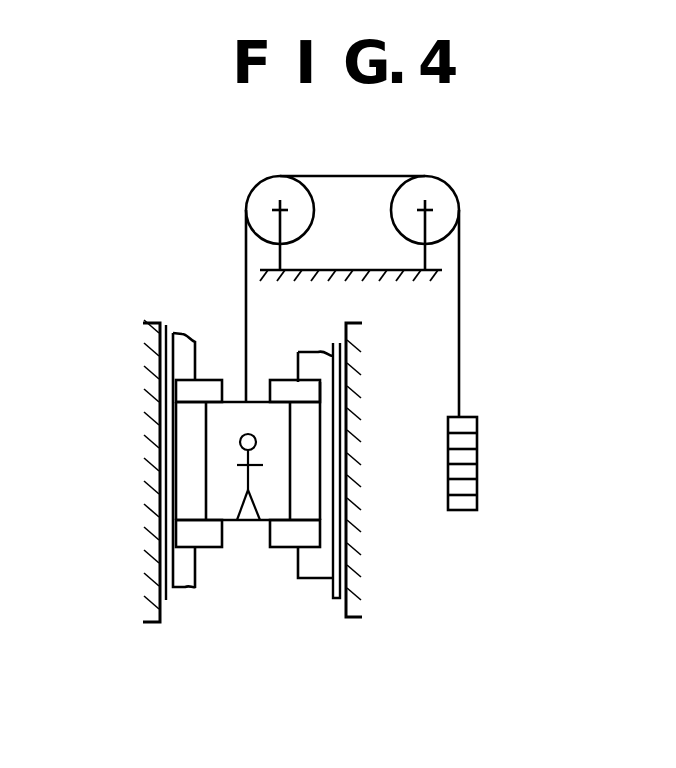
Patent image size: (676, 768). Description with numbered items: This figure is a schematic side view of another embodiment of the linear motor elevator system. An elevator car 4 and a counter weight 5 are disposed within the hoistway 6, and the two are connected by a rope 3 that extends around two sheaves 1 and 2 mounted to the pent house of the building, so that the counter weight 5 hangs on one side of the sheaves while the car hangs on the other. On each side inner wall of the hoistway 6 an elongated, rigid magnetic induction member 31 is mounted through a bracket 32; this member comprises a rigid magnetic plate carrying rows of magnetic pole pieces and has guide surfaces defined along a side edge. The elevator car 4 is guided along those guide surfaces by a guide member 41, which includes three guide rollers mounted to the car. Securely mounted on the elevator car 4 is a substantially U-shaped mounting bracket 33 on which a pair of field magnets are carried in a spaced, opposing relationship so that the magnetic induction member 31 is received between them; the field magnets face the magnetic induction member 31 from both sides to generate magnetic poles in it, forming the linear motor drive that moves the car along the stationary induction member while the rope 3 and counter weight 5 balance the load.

The sheave 1 is at (244, 200).
The sheave 2 is at (454, 191).
The rope 3 is at (460, 330).
The elevator car 4 is at (206, 475).
The counter weight 5 is at (478, 472).
The hoistway 6 is at (350, 560).
The magnetic induction member 31 is at (181, 580).
The bracket 32 is at (339, 600).
The mounting bracket 33 is at (186, 436).
The guide member 41 is at (321, 382).